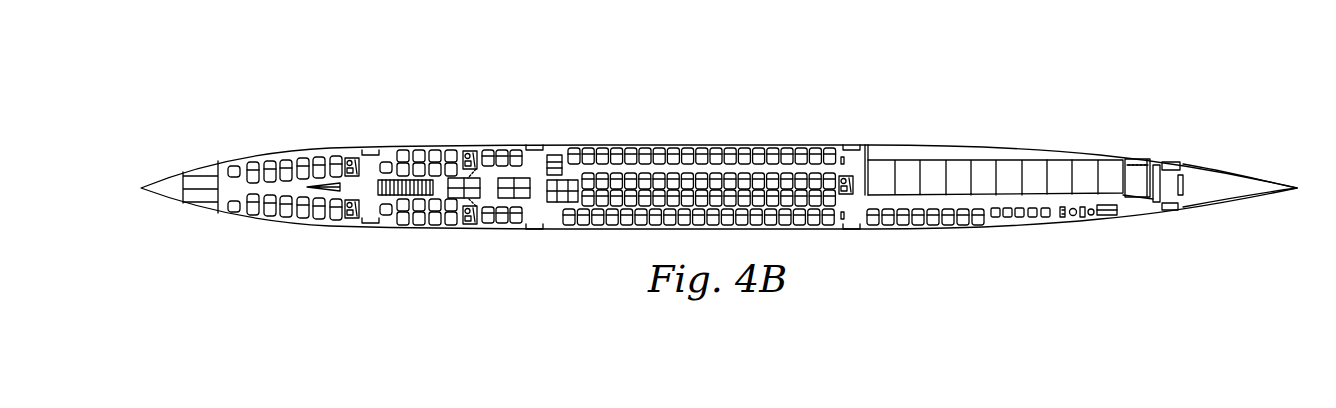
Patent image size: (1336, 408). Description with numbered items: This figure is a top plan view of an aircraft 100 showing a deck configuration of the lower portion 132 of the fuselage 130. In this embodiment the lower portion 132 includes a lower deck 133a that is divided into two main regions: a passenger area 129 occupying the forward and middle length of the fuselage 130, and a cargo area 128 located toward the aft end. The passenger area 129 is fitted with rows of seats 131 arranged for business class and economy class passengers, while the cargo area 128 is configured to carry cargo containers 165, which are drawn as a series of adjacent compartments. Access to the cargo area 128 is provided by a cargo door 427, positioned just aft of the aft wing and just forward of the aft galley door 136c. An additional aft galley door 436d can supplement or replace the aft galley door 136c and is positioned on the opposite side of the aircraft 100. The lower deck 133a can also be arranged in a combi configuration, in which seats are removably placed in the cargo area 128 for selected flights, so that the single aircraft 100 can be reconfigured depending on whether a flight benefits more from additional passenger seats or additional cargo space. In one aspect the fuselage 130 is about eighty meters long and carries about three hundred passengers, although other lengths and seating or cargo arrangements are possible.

The aircraft 100 is at (845, 74).
The cargo area 128 is at (978, 149).
The passenger area 129 is at (566, 150).
The fuselage 130 is at (892, 136).
The seats 131 is at (614, 150).
The lower portion 132 is at (1208, 168).
The lower deck 133a is at (1212, 194).
The aft galley door 136c is at (1172, 161).
The cargo containers 165 is at (1062, 160).
The cargo door 427 is at (1141, 155).
The aft galley door 436d is at (1168, 212).